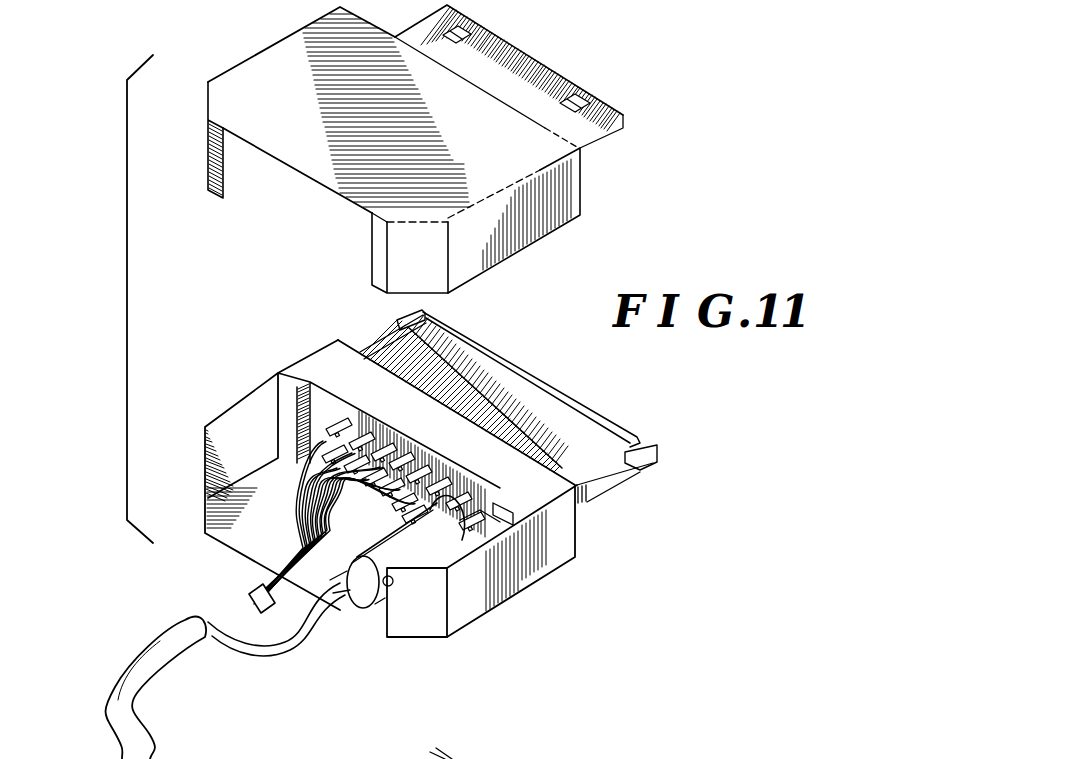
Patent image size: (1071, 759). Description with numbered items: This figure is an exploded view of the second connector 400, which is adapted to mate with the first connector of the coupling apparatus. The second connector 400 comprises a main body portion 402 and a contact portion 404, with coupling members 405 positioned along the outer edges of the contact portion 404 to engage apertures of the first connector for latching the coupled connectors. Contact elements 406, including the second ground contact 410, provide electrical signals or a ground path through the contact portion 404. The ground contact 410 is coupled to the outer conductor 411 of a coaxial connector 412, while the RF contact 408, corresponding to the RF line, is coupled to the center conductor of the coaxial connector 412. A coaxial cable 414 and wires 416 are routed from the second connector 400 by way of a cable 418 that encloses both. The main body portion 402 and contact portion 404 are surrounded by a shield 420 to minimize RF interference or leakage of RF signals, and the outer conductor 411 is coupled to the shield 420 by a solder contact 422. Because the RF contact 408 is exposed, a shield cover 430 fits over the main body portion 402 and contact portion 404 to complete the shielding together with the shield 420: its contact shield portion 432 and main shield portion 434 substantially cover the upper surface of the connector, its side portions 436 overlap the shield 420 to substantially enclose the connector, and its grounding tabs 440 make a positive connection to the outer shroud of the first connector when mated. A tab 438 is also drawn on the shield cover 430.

The second connector 400 is at (665, 530).
The main body portion 402 is at (537, 483).
The contact portion 404 is at (575, 427).
The coupling members 405 is at (397, 322).
The contact elements 406 is at (323, 437).
The RF contact 408 is at (477, 500).
The second ground contact 410 is at (465, 530).
The outer conductor 411 is at (438, 540).
The coaxial connector 412 is at (378, 610).
The coaxial cable 414 is at (270, 643).
The wires 416 is at (320, 537).
The cable 418 is at (163, 645).
The shield 420 is at (470, 594).
The solder contact 422 is at (386, 583).
The shield cover 430 is at (567, 226).
The contact shield portion 432 is at (580, 125).
The main shield portion 434 is at (302, 97).
The side portions 436 is at (480, 233).
The cover tab 438 is at (293, 197).
The grounding tabs 440 is at (452, 37).